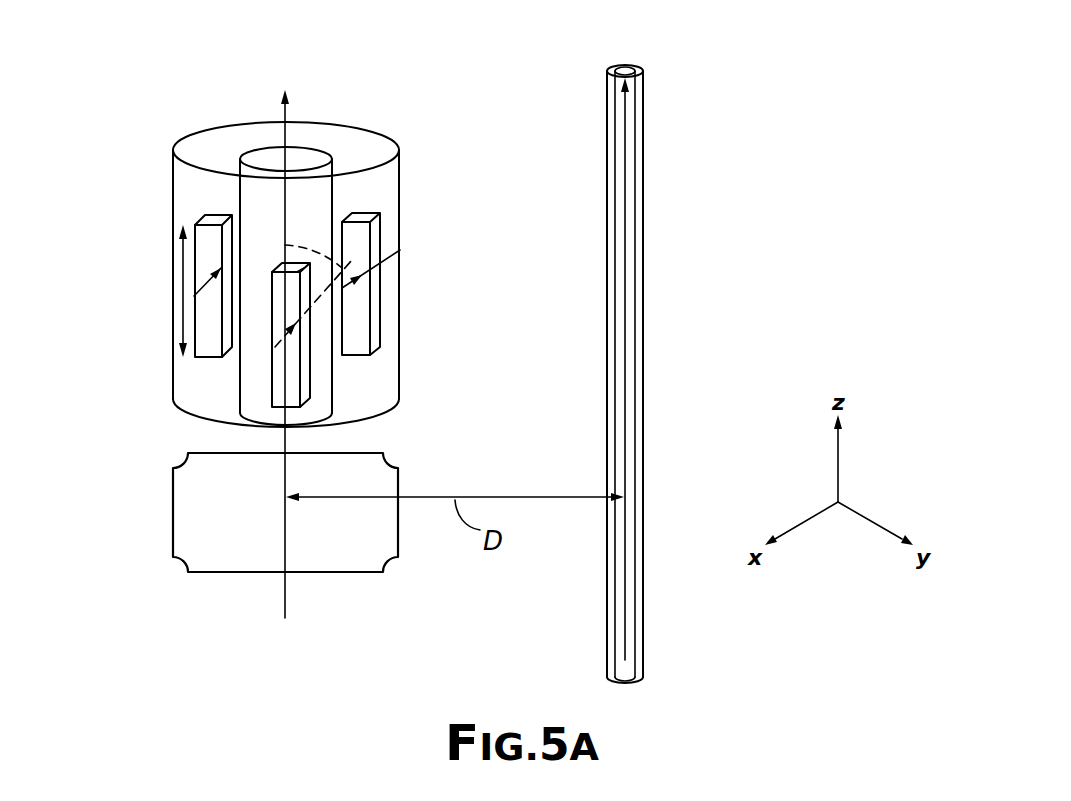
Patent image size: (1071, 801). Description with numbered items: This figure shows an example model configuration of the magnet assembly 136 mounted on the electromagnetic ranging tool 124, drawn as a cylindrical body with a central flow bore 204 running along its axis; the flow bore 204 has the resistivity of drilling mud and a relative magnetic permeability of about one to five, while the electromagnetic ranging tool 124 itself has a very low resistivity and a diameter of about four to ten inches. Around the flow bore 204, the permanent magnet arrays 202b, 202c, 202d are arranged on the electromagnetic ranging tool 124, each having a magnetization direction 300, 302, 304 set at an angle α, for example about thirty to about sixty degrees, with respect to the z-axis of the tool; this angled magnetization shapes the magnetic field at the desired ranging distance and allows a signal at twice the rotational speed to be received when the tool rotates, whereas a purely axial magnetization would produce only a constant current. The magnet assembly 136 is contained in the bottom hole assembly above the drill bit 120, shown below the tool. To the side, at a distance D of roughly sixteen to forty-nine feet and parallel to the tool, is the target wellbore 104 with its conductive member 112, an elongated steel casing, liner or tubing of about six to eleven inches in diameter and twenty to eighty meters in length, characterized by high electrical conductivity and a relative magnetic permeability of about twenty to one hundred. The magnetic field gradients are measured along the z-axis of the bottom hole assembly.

The magnet assembly 136 is at (202, 83).
The flow bore 204 is at (302, 158).
The electromagnetic ranging tool 124 is at (387, 180).
The permanent magnet array 202b is at (197, 222).
The permanent magnet array 202c is at (272, 388).
The permanent magnet array 202d is at (380, 290).
The magnetization direction 300 is at (203, 285).
The magnetization direction 302 is at (275, 347).
The magnetization direction 304 is at (400, 250).
The drill bit 120 is at (399, 483).
The target wellbore 104 is at (648, 55).
The conductive member 112 is at (637, 152).